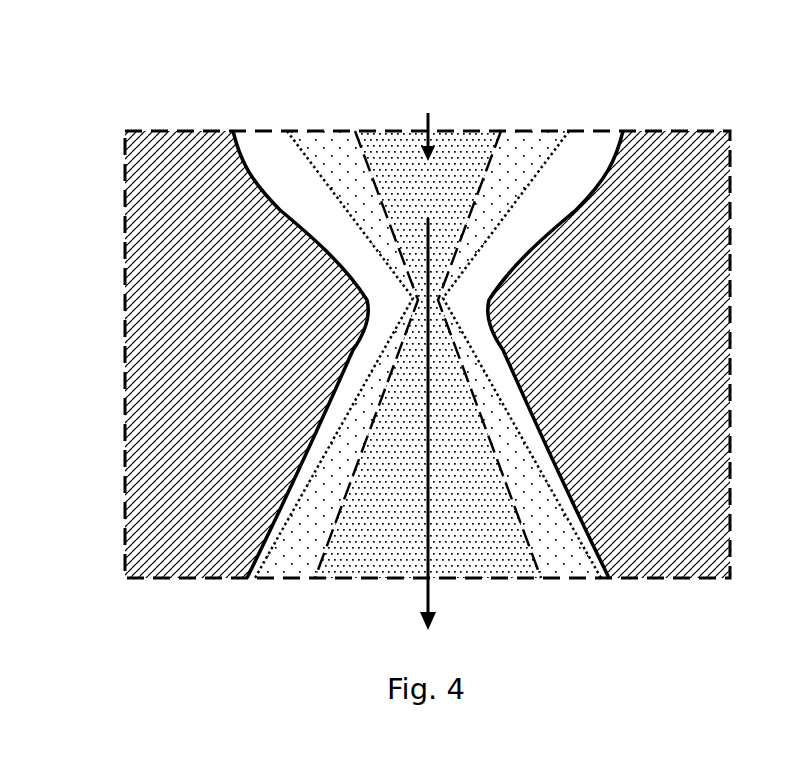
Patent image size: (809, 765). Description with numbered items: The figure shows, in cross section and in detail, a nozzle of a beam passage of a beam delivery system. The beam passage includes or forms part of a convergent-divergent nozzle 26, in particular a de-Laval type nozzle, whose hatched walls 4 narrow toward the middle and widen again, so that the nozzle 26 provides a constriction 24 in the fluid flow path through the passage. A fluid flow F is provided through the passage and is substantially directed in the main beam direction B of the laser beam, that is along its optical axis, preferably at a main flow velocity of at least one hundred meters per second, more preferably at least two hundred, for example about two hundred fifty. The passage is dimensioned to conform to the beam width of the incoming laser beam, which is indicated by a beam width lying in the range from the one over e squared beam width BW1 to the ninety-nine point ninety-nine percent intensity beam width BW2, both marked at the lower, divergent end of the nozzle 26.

The wall 4 is at (160, 352).
The constriction 24 is at (350, 311).
The convergent-divergent nozzle 26 is at (325, 99).
The 1/e2 beam width BW1 is at (518, 515).
The 99.99% intensity beam width BW2 is at (530, 448).
The main beam direction B is at (437, 128).
The fluid flow F is at (438, 424).